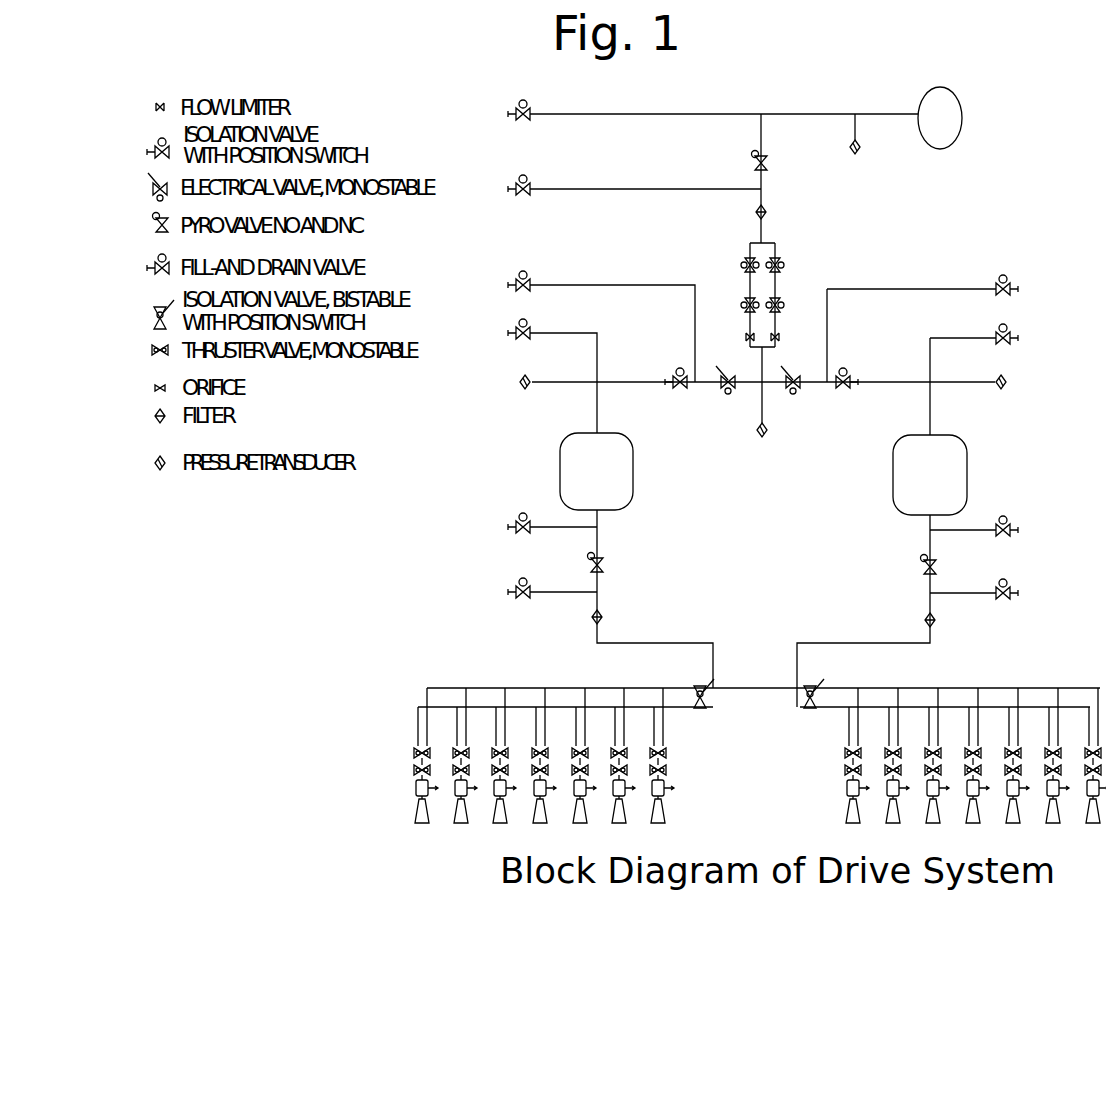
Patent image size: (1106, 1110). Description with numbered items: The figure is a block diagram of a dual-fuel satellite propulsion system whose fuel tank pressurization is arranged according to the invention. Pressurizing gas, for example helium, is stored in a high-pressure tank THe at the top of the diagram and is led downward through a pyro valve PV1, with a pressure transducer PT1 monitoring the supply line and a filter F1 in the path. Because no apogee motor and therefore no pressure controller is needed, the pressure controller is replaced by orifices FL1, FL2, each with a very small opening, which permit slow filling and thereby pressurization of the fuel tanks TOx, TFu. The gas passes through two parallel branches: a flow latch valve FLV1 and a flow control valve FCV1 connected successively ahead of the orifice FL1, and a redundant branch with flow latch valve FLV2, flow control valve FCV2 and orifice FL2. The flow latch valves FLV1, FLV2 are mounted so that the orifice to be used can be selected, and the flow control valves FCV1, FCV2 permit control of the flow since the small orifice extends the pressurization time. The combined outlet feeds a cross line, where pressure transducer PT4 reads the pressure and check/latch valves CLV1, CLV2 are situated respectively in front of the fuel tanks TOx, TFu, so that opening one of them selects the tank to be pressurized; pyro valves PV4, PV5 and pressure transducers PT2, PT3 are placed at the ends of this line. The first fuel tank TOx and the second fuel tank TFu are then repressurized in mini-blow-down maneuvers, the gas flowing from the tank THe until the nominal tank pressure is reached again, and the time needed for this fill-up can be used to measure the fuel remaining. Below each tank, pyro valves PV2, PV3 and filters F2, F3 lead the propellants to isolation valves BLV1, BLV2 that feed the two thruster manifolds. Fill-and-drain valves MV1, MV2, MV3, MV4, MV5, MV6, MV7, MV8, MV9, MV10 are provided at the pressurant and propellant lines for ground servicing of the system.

The high-pressure tank THe is at (940, 118).
The first fuel tank TOx is at (596, 471).
The second fuel tank TFu is at (930, 475).
The fill and drain valve MV1 is at (500, 111).
The fill and drain valve MV2 is at (500, 330).
The fill and drain valve MV3 is at (1027, 338).
The fill and drain valve MV4 is at (500, 186).
The fill and drain valve MV5 is at (1028, 529).
The fill and drain valve MV6 is at (501, 525).
The fill and drain valve MV7 is at (1028, 591).
The fill and drain valve MV8 is at (501, 590).
The fill and drain valve MV9 is at (1027, 289).
The fill and drain valve MV10 is at (496, 282).
The pyro valve normally closed PV1 is at (778, 165).
The pyro valve normally closed PV2 is at (582, 555).
The pyro valve normally closed PV3 is at (947, 568).
The pyro valve normally closed PV4 is at (682, 399).
The pyro valve normally closed PV5 is at (846, 400).
The pressure transducer PT1 is at (871, 150).
The pressure transducer PT2 is at (506, 382).
The pressure transducer PT3 is at (1020, 385).
The pressure transducer PT4 is at (766, 446).
The filter F1 is at (749, 214).
The filter F2 is at (586, 618).
The filter F3 is at (942, 622).
The flow latch valve FLV1 is at (728, 268).
The flow latch valve FLV2 is at (791, 268).
The flow control valve FCV1 is at (729, 307).
The flow control valve FCV2 is at (794, 307).
The orifice FL1 is at (734, 338).
The orifice FL2 is at (790, 338).
The check/latch valve CLV1 is at (796, 392).
The check/latch valve CLV2 is at (730, 392).
The bistable isolation valve BLV1 is at (822, 677).
The bistable isolation valve BLV2 is at (697, 688).